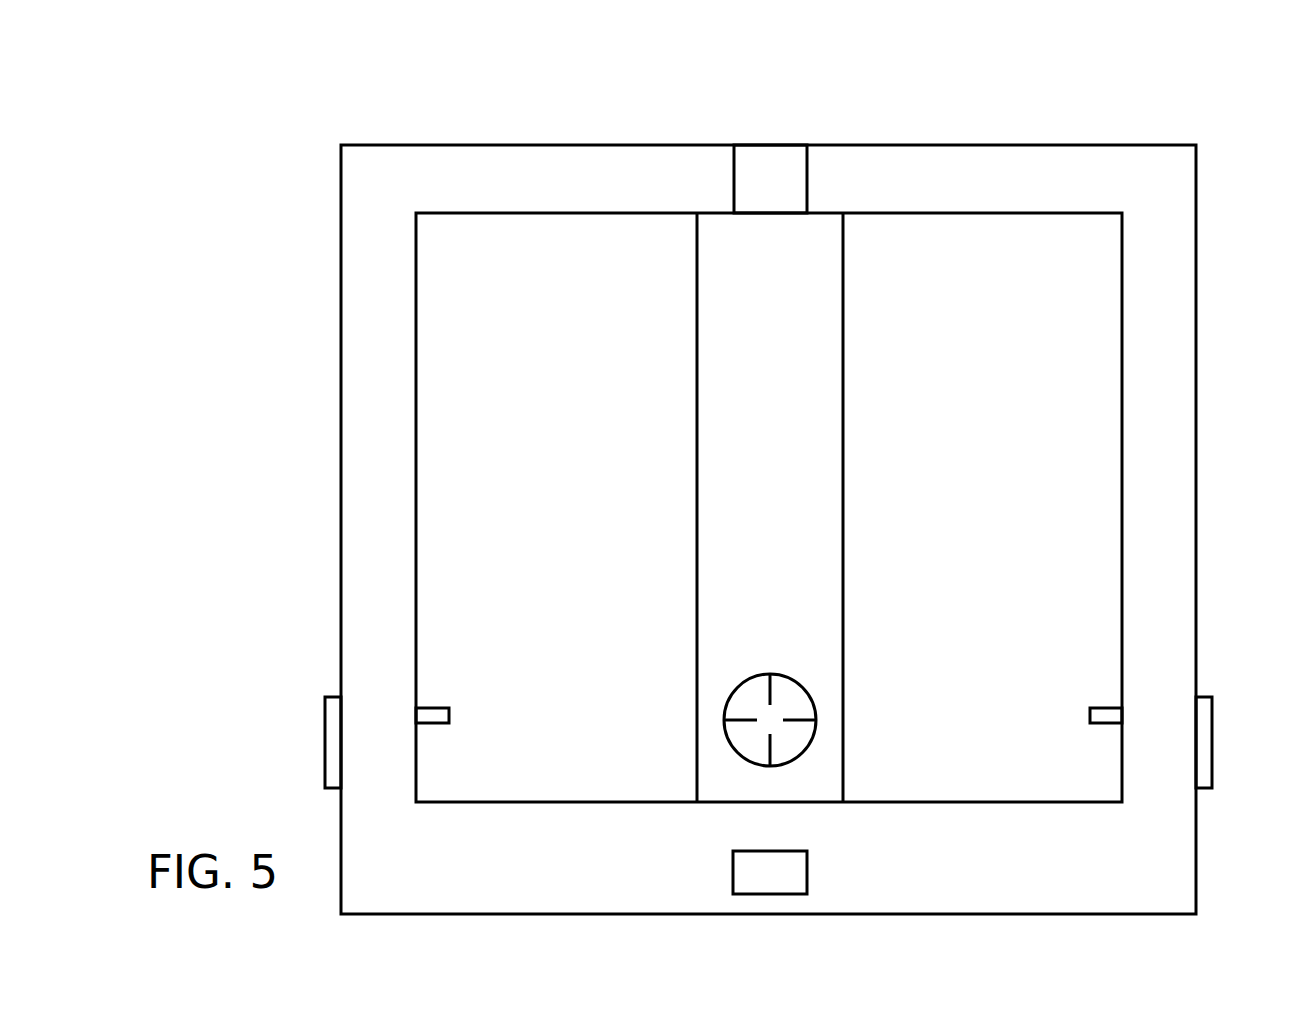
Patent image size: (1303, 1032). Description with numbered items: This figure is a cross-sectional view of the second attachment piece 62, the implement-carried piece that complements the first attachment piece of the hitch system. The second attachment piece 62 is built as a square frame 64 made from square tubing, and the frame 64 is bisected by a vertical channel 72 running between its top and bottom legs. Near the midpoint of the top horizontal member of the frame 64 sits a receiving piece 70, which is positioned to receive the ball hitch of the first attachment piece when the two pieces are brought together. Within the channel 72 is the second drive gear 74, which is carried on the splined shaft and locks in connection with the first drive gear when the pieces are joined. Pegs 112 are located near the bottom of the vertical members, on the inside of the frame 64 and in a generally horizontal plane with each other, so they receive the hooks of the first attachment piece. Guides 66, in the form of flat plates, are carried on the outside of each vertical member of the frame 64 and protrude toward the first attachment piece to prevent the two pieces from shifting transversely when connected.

The second attachment piece 62 is at (887, 127).
The square frame 64 is at (1205, 486).
The guides 66 is at (323, 752).
The receiving piece 70 is at (771, 216).
The vertical channel 72 is at (847, 547).
The second drive gear 74 is at (795, 738).
The pegs 112 is at (442, 733).